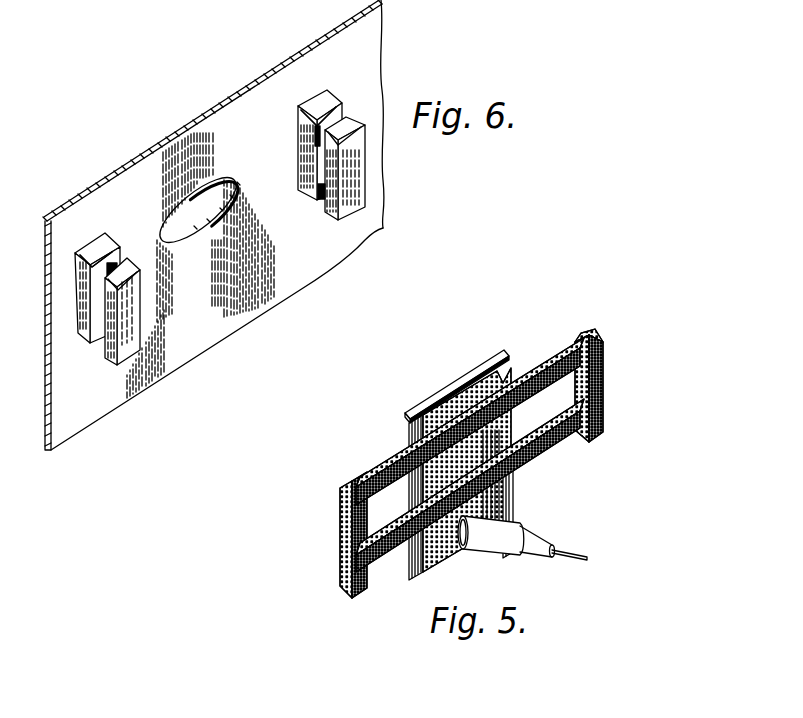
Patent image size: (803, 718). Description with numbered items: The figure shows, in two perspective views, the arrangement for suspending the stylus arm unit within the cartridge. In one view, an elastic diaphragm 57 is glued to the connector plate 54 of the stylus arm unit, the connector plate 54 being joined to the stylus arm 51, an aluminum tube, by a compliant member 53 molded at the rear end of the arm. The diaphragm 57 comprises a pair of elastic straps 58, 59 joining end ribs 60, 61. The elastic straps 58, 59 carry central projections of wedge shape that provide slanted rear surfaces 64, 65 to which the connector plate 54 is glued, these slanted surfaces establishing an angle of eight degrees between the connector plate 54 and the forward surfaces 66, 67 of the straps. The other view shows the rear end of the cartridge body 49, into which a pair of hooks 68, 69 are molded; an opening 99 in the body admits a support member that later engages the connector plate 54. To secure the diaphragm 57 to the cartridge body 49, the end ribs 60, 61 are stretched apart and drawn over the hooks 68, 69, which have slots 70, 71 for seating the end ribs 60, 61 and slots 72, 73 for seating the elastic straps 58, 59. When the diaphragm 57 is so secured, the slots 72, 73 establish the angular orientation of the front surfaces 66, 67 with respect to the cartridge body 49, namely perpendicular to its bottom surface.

In FIG. 6, the cartridge body 49 is at (245, 108).
In FIG. 6, the opening 99 is at (190, 226).
In FIG. 6, the slot 70 is at (76, 336).
In FIG. 6, the hook 68 is at (125, 367).
In FIG. 6, the slot 72 is at (122, 255).
In FIG. 6, the hook 69 is at (350, 155).
In FIG. 6, the slot 71 is at (343, 114).
In FIG. 6, the slot 73 is at (318, 203).
In FIG. 5, the elastic diaphragm 57 is at (472, 432).
In FIG. 5, the elastic strap 58 is at (545, 362).
In FIG. 5, the elastic strap 59 is at (542, 440).
In FIG. 5, the end rib 60 is at (341, 548).
In FIG. 5, the end rib 61 is at (607, 387).
In FIG. 5, the connector plate 54 is at (450, 446).
In FIG. 5, the forward surface 66 is at (497, 376).
In FIG. 5, the slanted rear surface 64 is at (460, 408).
In FIG. 5, the slanted rear surface 65 is at (443, 492).
In FIG. 5, the forward surface 67 is at (505, 494).
In FIG. 5, the compliant member 53 is at (497, 540).
In FIG. 5, the stylus arm 51 is at (576, 556).